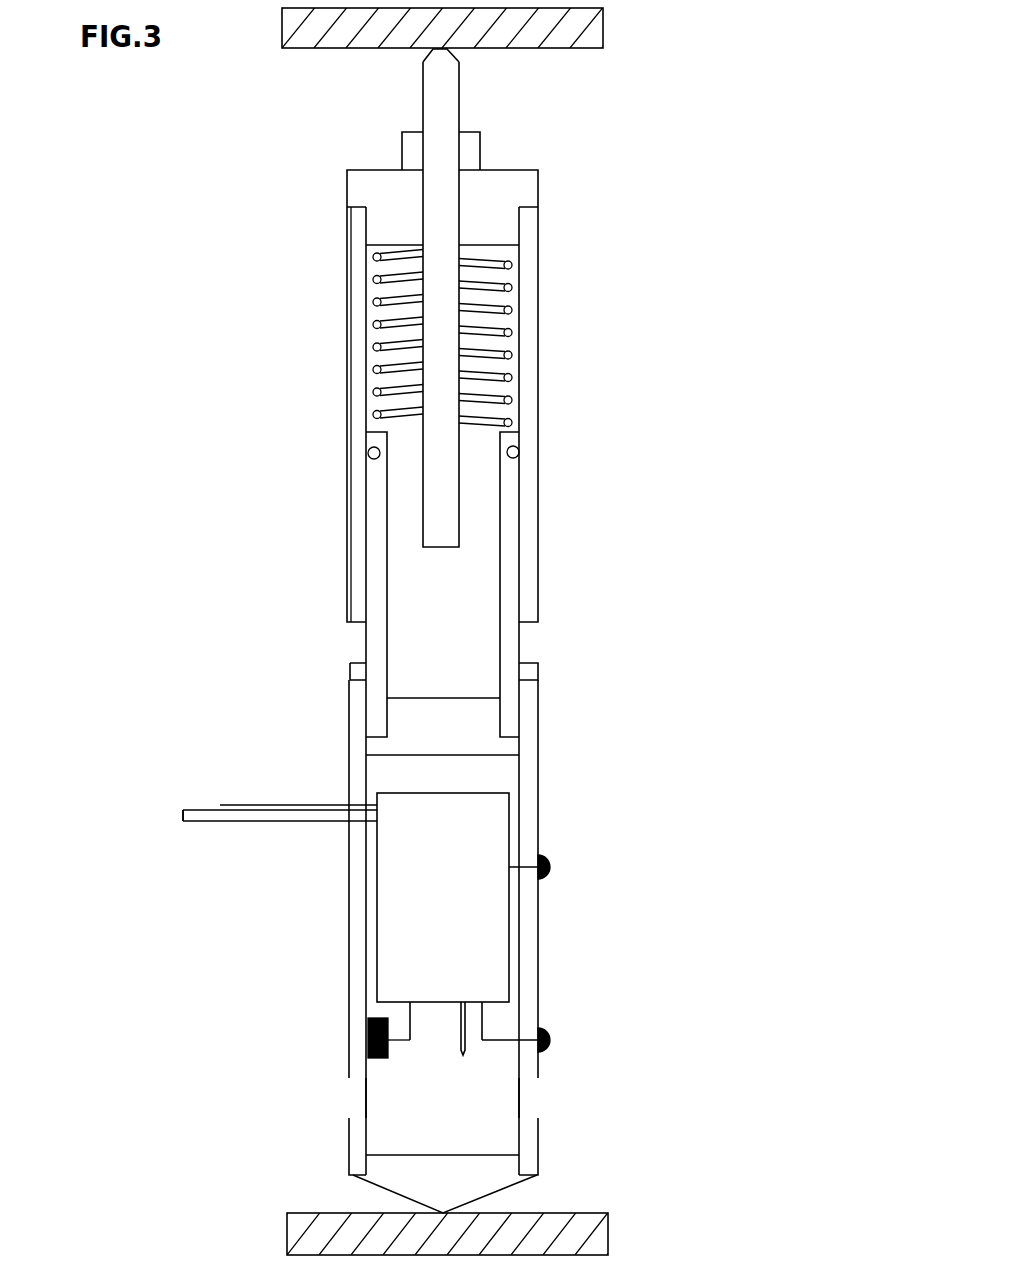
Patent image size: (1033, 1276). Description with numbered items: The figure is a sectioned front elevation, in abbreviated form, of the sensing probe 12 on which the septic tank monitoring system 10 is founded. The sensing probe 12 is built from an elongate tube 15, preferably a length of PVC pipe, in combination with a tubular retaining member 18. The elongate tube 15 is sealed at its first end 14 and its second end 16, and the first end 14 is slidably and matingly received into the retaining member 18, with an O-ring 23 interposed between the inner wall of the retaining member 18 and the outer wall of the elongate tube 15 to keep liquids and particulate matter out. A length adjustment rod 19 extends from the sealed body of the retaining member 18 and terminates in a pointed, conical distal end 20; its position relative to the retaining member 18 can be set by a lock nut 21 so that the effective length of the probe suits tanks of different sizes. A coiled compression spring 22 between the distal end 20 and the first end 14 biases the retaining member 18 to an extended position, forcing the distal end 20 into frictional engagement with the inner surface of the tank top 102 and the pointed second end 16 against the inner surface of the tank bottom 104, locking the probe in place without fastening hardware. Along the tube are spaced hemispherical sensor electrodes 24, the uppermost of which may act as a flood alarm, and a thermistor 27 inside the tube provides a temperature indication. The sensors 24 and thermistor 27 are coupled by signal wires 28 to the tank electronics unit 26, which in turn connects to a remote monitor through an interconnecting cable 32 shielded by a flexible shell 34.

The septic tank monitoring system 10 is at (608, 493).
The sensing probe 12 is at (540, 727).
The first end 14 is at (350, 680).
The elongate tube 15 is at (349, 948).
The second end 16 is at (353, 1175).
The retaining member 18 is at (347, 283).
The length adjustment rod 19 is at (423, 96).
The distal end 20 is at (441, 48).
The lock nut 21 is at (480, 142).
The coiled compression spring 22 is at (372, 367).
The O-ring 23 is at (368, 452).
The sensors 24 is at (550, 867).
The tank electronics unit 26 is at (510, 828).
The thermistor 27 is at (368, 1040).
The signal wires 28 is at (410, 1022).
The interconnecting cable 32 is at (202, 821).
The shell 34 is at (313, 805).
The top 102 is at (603, 30).
The bottom 104 is at (608, 1233).